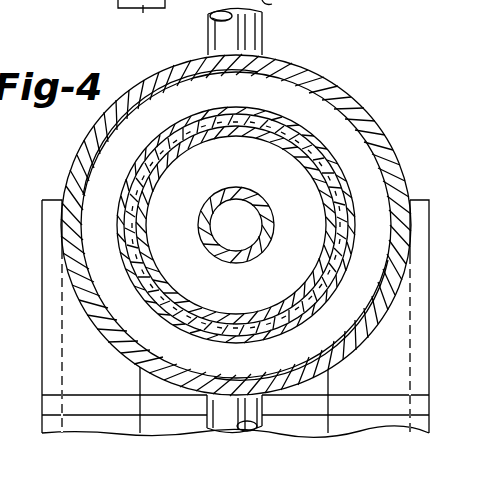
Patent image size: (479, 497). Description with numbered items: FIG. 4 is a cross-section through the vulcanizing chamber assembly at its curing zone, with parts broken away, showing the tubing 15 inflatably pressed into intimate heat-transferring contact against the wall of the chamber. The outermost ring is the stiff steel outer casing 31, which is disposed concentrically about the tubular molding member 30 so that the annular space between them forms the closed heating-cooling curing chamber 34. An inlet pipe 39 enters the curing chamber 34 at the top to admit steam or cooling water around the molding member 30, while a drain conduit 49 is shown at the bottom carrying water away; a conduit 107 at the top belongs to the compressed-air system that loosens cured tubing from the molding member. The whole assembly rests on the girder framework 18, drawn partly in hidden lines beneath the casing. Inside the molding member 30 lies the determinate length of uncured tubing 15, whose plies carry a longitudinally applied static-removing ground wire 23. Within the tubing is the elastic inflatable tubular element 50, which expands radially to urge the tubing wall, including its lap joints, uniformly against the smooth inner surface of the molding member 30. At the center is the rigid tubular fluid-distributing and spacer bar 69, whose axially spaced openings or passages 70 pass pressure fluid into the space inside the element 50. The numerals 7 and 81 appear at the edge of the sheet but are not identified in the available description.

The housing 7 is at (475, 212).
The tubing or hose 15 is at (120, 233).
The girder framework 18 is at (143, 13).
The ground wire 23 is at (292, 225).
The molding member 30 is at (301, 175).
The outer casing 31 is at (352, 100).
The heating-cooling curing chamber 34 is at (287, 95).
The inlet pipe 39 is at (219, 40).
The drain conduit 49 is at (222, 417).
The inflatable tubular element 50 is at (292, 147).
The fluid-distributing and spacer bar 69 is at (237, 253).
The openings or passages 70 is at (200, 220).
The wall 81 is at (454, 290).
The conduit 107 is at (266, 2).